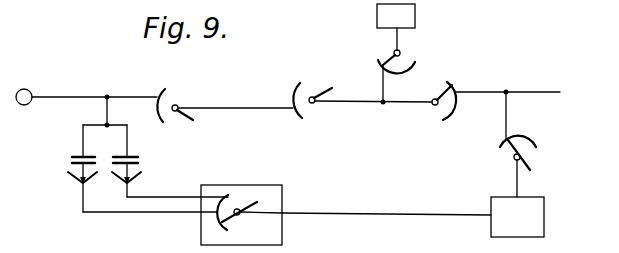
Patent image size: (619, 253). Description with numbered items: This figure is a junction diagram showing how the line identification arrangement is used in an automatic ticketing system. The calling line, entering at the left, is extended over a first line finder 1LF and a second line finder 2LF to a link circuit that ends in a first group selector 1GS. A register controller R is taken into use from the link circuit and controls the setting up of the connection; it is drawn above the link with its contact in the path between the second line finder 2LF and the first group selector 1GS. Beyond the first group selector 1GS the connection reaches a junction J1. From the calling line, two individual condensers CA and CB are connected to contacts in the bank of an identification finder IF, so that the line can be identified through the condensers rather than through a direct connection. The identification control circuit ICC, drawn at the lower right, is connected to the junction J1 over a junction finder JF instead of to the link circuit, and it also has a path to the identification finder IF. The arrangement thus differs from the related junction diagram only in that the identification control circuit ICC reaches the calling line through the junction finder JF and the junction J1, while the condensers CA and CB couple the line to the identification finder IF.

The line finder 1LF is at (175, 94).
The line finder 2LF is at (312, 90).
The register controller R is at (396, 53).
The first group selector 1GS is at (449, 93).
The junction J1 is at (519, 104).
The junction finder JF is at (528, 166).
The identification control circuit ICC is at (517, 217).
The identification finder IF is at (241, 215).
The condenser CA is at (86, 168).
The condenser CB is at (130, 161).